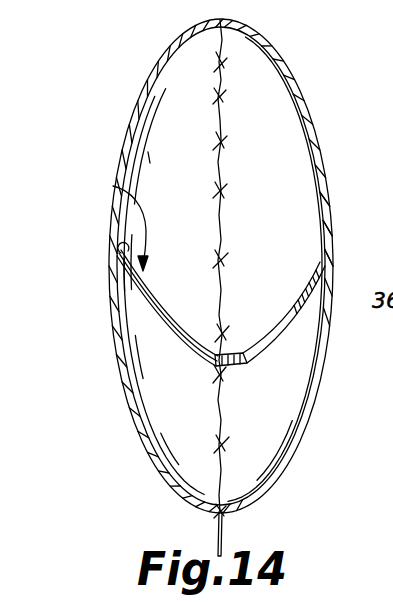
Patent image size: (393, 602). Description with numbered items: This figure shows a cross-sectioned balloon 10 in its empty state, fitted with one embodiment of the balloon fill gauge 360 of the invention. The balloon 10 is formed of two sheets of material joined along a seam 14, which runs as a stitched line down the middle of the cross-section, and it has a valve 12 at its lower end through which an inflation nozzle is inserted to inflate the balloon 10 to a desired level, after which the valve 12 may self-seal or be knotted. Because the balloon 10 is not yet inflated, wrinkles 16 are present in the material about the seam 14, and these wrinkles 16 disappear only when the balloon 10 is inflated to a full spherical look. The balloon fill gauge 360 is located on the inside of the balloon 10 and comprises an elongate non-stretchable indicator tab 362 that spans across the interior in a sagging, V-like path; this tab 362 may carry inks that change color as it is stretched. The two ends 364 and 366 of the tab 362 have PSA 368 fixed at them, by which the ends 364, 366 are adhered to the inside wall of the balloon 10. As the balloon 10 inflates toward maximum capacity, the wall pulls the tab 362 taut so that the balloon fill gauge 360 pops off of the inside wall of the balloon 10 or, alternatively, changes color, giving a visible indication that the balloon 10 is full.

The balloon 10 is at (280, 70).
The valve 12 is at (217, 536).
The seam 14 is at (217, 92).
The wrinkles 16 is at (236, 224).
The balloon fill gauge 360 is at (71, 231).
The indicator tab 362 is at (107, 221).
The end of tab 364 is at (112, 298).
The end of tab 366 is at (333, 234).
The PSA 368 is at (119, 242).